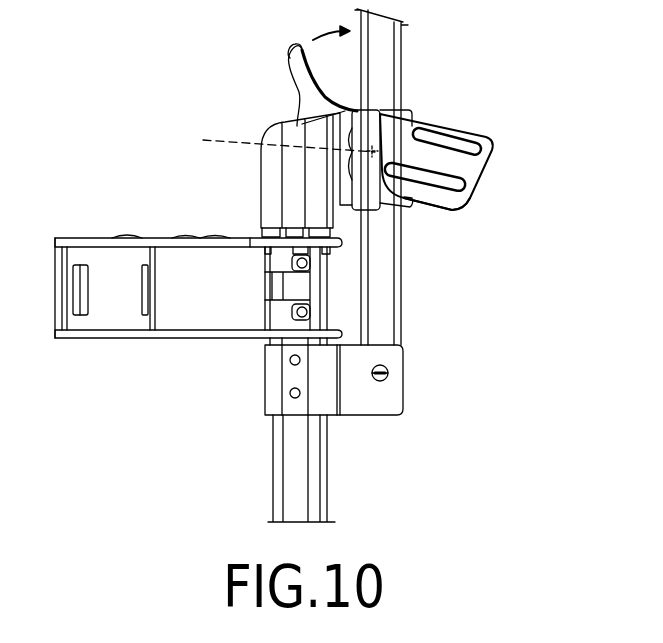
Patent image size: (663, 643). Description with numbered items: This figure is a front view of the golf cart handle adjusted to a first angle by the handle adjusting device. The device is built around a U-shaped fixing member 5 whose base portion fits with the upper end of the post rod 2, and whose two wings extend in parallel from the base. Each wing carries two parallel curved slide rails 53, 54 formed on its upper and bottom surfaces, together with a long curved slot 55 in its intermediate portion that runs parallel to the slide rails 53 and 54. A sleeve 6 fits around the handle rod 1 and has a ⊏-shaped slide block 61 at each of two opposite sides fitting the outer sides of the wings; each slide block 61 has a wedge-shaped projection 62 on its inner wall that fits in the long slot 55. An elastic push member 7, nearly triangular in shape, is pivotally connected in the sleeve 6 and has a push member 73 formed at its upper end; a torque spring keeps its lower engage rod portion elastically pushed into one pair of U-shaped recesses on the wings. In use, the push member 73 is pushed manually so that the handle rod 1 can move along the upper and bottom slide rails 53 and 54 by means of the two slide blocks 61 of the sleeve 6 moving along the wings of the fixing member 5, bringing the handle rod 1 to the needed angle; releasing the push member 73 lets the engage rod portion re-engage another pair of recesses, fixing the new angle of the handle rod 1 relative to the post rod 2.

The handle rod 1 is at (388, 48).
The post rod 2 is at (317, 467).
The U-shaped fixing member 5 is at (262, 200).
The sleeve 6 is at (412, 107).
The elastic push member 7 is at (290, 112).
The slide rail 53 is at (463, 123).
The slide rail 54 is at (437, 212).
The long curved slot 55 is at (467, 170).
The slide block 61 is at (377, 203).
The wedge-shaped projection 62 is at (273, 139).
The push member 73 is at (290, 58).